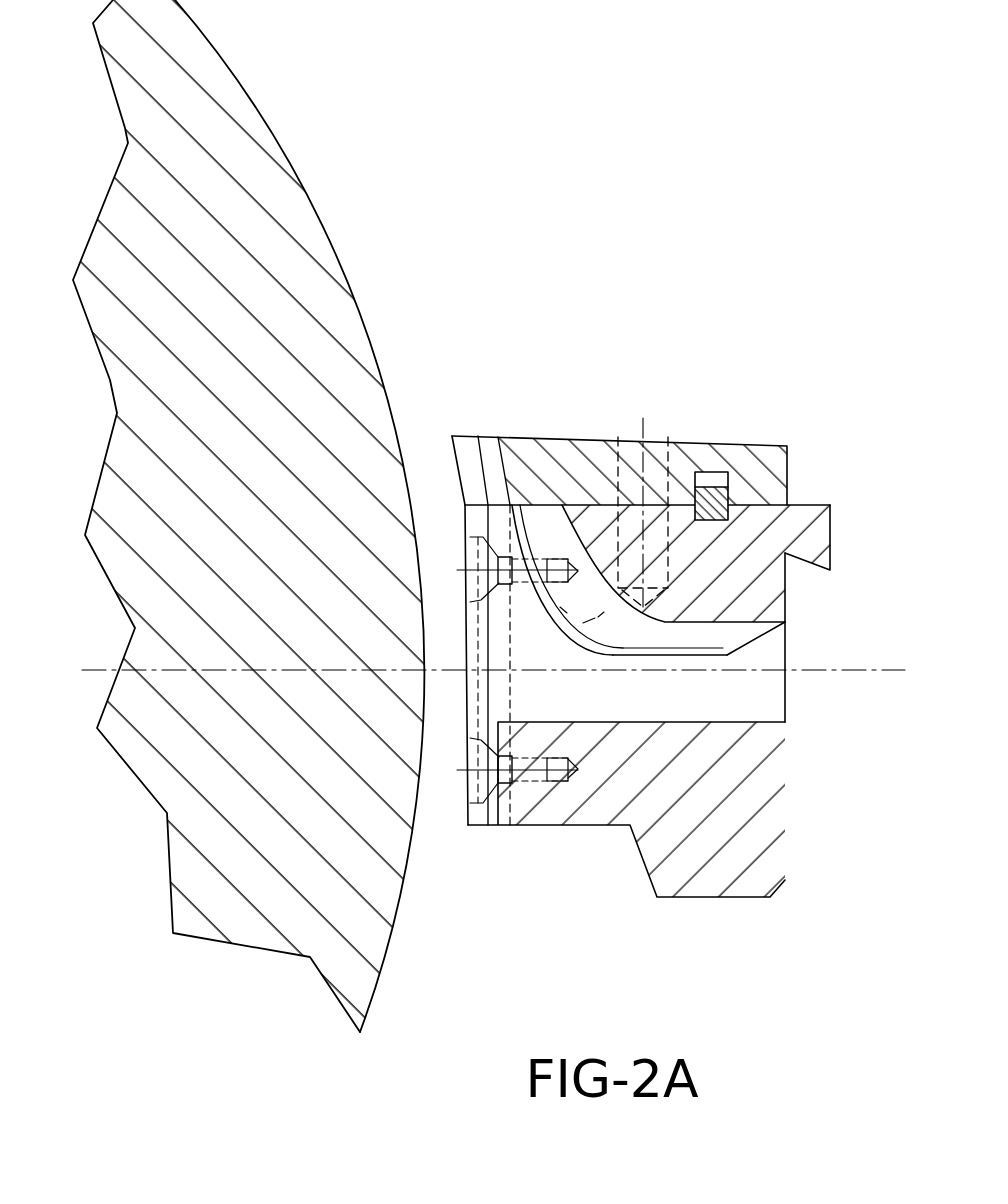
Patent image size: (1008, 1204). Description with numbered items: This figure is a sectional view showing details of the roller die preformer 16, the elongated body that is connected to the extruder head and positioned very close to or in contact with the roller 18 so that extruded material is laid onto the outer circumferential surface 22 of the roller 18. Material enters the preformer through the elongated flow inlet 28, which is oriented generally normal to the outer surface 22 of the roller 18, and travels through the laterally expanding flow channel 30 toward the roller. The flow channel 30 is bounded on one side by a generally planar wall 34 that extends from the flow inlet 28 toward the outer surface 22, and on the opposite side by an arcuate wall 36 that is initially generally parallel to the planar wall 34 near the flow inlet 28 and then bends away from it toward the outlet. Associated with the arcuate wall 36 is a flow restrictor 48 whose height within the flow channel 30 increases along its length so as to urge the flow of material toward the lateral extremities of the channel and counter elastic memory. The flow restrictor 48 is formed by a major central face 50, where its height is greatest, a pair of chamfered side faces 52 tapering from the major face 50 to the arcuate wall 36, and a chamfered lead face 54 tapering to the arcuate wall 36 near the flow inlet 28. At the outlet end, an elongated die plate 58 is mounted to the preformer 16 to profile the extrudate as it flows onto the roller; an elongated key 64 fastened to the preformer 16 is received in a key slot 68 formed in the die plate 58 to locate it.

The roller die preformer 16 is at (656, 422).
The roller 18 is at (185, 387).
The outer circumferential surface 22 is at (388, 933).
The flow inlet 28 is at (780, 643).
The flow channel 30 is at (638, 694).
The planar wall 34 is at (747, 722).
The arcuate wall 36 is at (758, 620).
The flow restrictor 48 is at (650, 648).
The major central face 50 is at (553, 622).
The chamfered side faces 52 is at (685, 640).
The chamfered lead face 54 is at (750, 642).
The die plate 58 is at (742, 455).
The key 64 is at (718, 490).
The key slot 68 is at (705, 480).